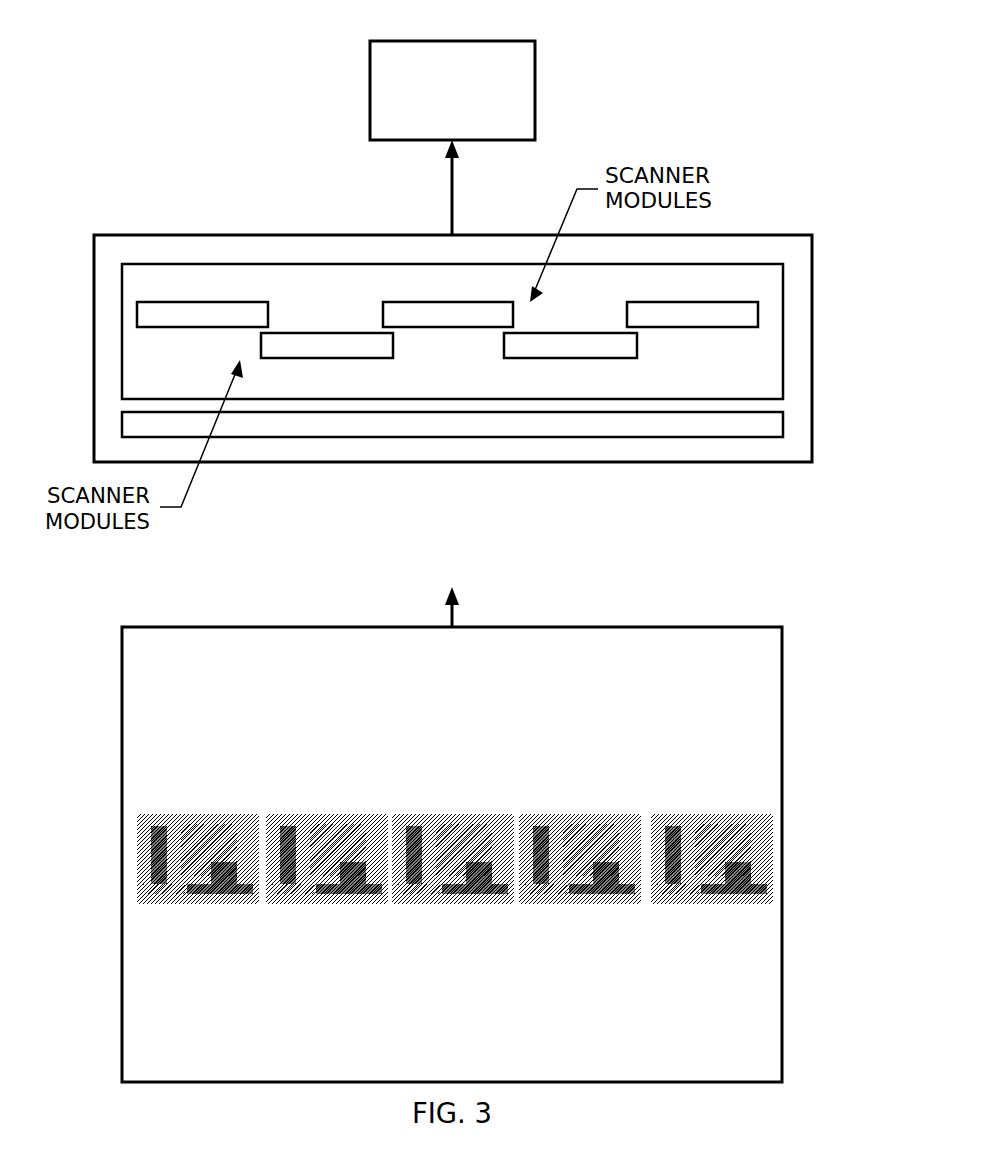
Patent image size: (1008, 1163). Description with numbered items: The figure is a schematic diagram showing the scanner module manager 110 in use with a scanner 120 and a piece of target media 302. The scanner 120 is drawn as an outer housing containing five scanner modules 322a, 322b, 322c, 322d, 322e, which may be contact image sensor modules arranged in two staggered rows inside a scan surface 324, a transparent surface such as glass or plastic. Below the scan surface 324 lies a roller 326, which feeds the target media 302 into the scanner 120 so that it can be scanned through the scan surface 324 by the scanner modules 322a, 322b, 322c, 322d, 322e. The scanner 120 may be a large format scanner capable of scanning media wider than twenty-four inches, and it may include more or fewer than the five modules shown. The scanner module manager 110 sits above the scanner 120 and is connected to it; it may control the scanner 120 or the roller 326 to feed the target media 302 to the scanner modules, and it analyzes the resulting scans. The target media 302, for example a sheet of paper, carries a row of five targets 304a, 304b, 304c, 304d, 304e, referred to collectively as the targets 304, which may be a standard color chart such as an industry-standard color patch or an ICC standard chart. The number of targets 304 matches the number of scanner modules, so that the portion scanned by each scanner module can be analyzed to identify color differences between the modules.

The scanner module manager 110 is at (455, 41).
The scanner 120 is at (222, 235).
The target media 302 is at (257, 626).
The targets 304 is at (112, 802).
The target 304a is at (187, 813).
The target 304b is at (315, 812).
The target 304c is at (442, 812).
The target 304d is at (565, 812).
The target 304e is at (678, 812).
The scanner module 322a is at (227, 324).
The scanner module 322b is at (351, 356).
The scanner module 322c is at (472, 324).
The scanner module 322d is at (594, 356).
The scanner module 322e is at (717, 324).
The scan surface 324 is at (687, 282).
The roller 326 is at (517, 436).